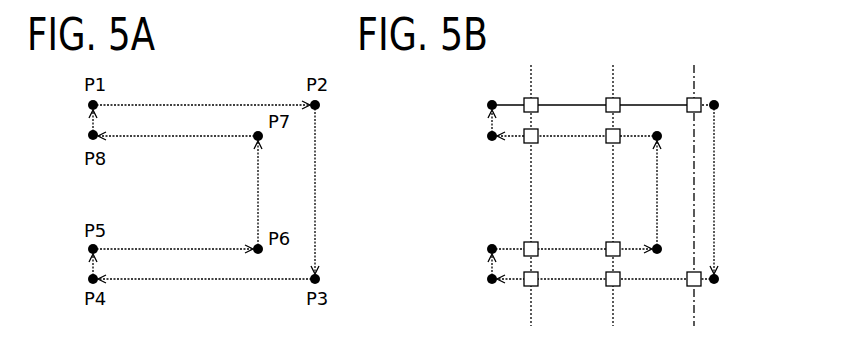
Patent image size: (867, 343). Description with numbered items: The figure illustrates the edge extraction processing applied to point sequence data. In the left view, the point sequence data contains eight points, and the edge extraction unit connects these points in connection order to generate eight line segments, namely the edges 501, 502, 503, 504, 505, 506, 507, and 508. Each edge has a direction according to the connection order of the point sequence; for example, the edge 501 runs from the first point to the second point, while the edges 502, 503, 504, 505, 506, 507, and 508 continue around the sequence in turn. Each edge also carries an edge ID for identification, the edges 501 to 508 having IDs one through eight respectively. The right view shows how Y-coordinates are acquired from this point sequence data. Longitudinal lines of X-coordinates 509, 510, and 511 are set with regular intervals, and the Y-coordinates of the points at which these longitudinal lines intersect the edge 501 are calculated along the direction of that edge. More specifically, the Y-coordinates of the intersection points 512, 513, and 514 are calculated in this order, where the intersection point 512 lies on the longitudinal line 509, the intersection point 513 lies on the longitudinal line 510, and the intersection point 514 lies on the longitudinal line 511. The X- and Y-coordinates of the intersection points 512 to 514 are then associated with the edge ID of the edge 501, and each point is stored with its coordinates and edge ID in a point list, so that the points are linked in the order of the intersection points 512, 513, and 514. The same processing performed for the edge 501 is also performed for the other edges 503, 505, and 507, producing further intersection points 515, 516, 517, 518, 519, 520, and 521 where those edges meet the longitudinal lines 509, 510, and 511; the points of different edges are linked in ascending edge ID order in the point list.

In FIG. 5A, the edge 501 is at (208, 102).
In FIG. 5A, the edge 502 is at (316, 182).
In FIG. 5A, the edge 503 is at (206, 281).
In FIG. 5A, the edge 504 is at (90, 265).
In FIG. 5A, the edge 505 is at (170, 239).
In FIG. 5A, the edge 506 is at (257, 196).
In FIG. 5A, the edge 507 is at (172, 140).
In FIG. 5A, the edge 508 is at (90, 123).
In FIG. 5B, the longitudinal line of X-coordinate 509 is at (542, 53).
In FIG. 5B, the longitudinal line of X-coordinate 510 is at (622, 53).
In FIG. 5B, the longitudinal line of X-coordinate 511 is at (703, 53).
In FIG. 5B, the intersection point 512 is at (538, 98).
In FIG. 5B, the intersection point 513 is at (620, 98).
In FIG. 5B, the intersection point 514 is at (701, 98).
In FIG. 5B, the intersection point 515 is at (700, 287).
In FIG. 5B, the intersection point 516 is at (620, 287).
In FIG. 5B, the intersection point 517 is at (537, 287).
In FIG. 5B, the intersection point 518 is at (524, 242).
In FIG. 5B, the intersection point 519 is at (608, 242).
In FIG. 5B, the intersection point 520 is at (608, 143).
In FIG. 5B, the intersection point 521 is at (526, 143).